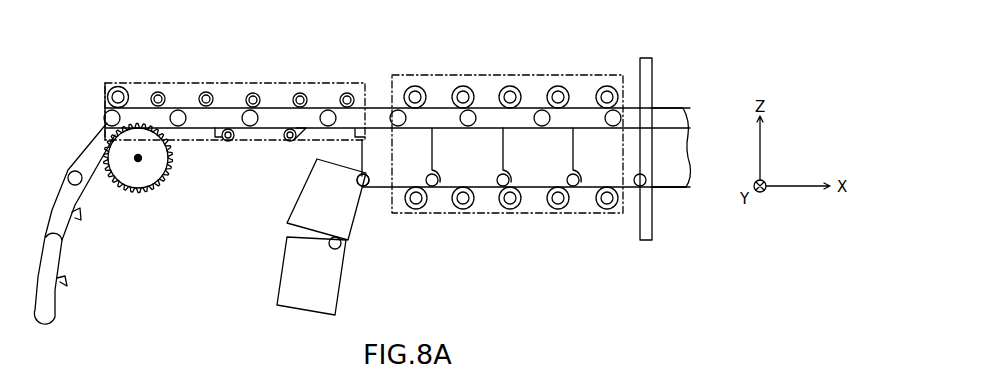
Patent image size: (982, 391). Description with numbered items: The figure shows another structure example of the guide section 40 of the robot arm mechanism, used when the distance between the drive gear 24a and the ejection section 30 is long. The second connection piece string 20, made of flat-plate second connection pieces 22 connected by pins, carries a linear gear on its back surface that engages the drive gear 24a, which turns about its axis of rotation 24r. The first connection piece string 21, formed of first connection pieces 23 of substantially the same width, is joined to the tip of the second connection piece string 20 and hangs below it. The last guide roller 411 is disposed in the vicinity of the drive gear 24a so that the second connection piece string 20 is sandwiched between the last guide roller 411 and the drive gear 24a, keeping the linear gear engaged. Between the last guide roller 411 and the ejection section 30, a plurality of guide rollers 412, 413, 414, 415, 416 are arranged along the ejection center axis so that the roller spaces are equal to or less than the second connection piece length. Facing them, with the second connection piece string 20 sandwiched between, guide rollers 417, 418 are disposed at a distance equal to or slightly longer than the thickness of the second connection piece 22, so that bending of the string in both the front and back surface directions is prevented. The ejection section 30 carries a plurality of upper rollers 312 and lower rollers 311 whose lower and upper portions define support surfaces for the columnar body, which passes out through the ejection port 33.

The second connection piece string 20 is at (74, 254).
The first connection piece string 21 is at (366, 258).
The second connection piece 22 is at (680, 108).
The first connection piece 23 is at (672, 188).
The drive gear 24a is at (118, 184).
The axis of rotation 24r is at (134, 158).
The ejection section 30 is at (580, 75).
The ejection port 33 is at (646, 58).
The guide section 40 is at (143, 83).
The lower rollers 311 is at (607, 209).
The upper rollers 312 is at (607, 86).
The last guide roller 411 is at (109, 91).
The guide roller 412 is at (162, 92).
The guide roller 413 is at (209, 92).
The guide roller 414 is at (256, 93).
The guide roller 415 is at (303, 93).
The guide roller 416 is at (350, 93).
The guide roller 417 is at (227, 142).
The guide roller 418 is at (289, 142).